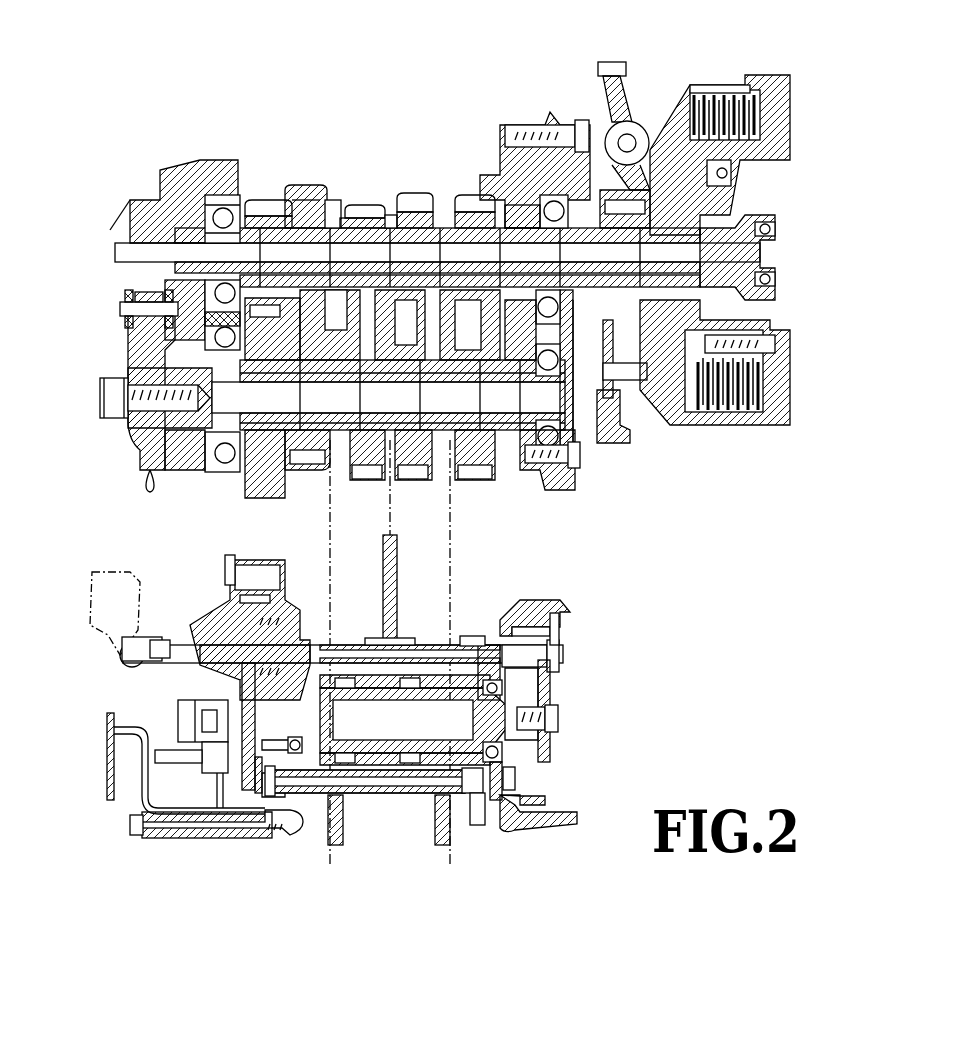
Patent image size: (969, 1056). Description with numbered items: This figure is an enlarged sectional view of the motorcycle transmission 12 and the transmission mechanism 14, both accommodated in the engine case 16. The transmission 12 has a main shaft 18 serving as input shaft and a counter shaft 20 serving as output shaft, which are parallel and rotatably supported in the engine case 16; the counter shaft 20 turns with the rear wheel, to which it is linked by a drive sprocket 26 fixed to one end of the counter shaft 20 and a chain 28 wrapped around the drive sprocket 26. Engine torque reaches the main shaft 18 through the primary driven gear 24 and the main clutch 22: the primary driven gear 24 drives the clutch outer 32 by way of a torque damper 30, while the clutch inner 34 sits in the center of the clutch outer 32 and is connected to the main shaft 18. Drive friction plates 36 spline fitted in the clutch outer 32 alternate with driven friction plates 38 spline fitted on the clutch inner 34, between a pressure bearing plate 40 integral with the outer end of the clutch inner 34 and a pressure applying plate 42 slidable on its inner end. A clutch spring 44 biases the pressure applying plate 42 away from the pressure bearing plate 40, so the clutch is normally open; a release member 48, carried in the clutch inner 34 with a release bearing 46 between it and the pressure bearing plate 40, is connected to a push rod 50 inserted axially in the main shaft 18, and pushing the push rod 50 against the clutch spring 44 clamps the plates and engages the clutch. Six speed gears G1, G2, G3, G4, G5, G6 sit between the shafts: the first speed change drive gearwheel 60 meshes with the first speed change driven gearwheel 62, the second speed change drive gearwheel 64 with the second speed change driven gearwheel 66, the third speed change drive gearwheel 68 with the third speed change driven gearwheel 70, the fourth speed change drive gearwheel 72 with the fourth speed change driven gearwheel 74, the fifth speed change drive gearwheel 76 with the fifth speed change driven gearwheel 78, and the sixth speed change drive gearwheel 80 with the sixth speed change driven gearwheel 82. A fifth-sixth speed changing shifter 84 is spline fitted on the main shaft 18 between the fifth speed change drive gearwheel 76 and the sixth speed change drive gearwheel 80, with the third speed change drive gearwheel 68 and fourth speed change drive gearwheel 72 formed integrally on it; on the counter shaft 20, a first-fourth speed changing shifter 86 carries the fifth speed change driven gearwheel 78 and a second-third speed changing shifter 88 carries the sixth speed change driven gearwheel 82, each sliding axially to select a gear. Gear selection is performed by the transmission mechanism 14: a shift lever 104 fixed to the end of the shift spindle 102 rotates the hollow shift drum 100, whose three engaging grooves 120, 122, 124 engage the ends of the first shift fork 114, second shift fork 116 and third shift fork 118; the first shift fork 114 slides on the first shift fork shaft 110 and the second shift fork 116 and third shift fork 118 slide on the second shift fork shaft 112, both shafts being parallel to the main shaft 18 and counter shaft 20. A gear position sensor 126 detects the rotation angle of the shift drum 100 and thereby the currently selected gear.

The transmission 12 is at (224, 112).
The transmission mechanism 14 is at (568, 847).
The engine case 16 is at (205, 468).
The main shaft 18 is at (330, 228).
The counter shaft 20 is at (318, 413).
The main clutch 22 is at (664, 80).
The primary driven gear 24 is at (612, 62).
The drive sprocket 26 is at (128, 336).
The chain 28 is at (120, 296).
The torque damper 30 is at (612, 130).
The clutch outer 32 is at (698, 85).
The clutch inner 34 is at (770, 352).
The drive friction plates 36 is at (730, 95).
The driven friction plates 38 is at (740, 412).
The pressure bearing plate 40 is at (790, 125).
The pressure applying plate 42 is at (668, 400).
The clutch spring 44 is at (731, 173).
The release bearing 46 is at (775, 280).
The release member 48 is at (762, 254).
The push rod 50 is at (395, 255).
The first speed change drive gearwheel 60 is at (520, 210).
The first speed change driven gearwheel 62 is at (545, 492).
The second speed change drive gearwheel 64 is at (262, 200).
The second speed change driven gearwheel 66 is at (250, 498).
The third speed change drive gearwheel 68 is at (362, 205).
The third speed change driven gearwheel 70 is at (372, 482).
The fourth speed change drive gearwheel 72 is at (416, 193).
The fourth speed change driven gearwheel 74 is at (428, 482).
The fifth speed change drive gearwheel 76 is at (470, 195).
The fifth speed change driven gearwheel 78 is at (476, 482).
The sixth speed change drive gearwheel 80 is at (295, 185).
The sixth speed change driven gearwheel 82 is at (310, 470).
The 5-6 speed changing shifter 84 is at (390, 215).
The 1-4 speed changing shifter 86 is at (560, 395).
The 2-3 speed changing shifter 88 is at (128, 368).
The shift drum 100 is at (420, 675).
The shift spindle 102 is at (215, 622).
The shift lever 104 is at (112, 618).
The first shift fork shaft 110 is at (478, 645).
The second shift fork shaft 112 is at (398, 795).
The first shift fork 114 is at (397, 565).
The second shift fork 116 is at (432, 846).
The third shift fork 118 is at (350, 846).
The engaging groove 120 is at (385, 795).
The engaging groove 122 is at (525, 656).
The engaging groove 124 is at (355, 645).
The gear position sensor 126 is at (180, 722).
The first speed gear G1 is at (500, 515).
The second speed gear G2 is at (275, 185).
The third speed gear G3 is at (355, 490).
The fourth speed gear G4 is at (414, 485).
The fifth speed gear G5 is at (478, 175).
The sixth speed gear G6 is at (318, 180).